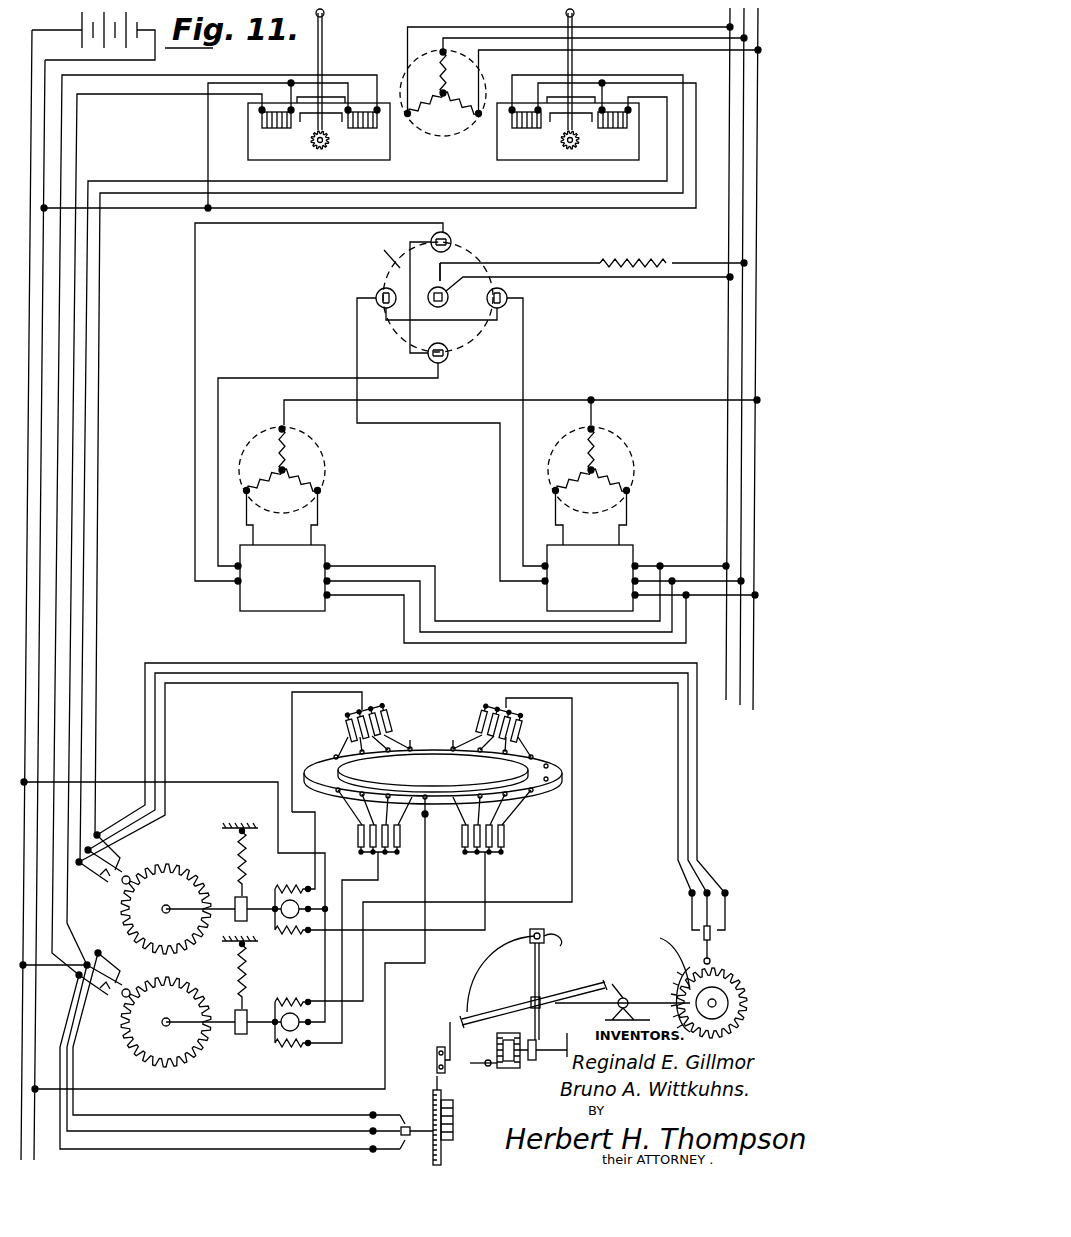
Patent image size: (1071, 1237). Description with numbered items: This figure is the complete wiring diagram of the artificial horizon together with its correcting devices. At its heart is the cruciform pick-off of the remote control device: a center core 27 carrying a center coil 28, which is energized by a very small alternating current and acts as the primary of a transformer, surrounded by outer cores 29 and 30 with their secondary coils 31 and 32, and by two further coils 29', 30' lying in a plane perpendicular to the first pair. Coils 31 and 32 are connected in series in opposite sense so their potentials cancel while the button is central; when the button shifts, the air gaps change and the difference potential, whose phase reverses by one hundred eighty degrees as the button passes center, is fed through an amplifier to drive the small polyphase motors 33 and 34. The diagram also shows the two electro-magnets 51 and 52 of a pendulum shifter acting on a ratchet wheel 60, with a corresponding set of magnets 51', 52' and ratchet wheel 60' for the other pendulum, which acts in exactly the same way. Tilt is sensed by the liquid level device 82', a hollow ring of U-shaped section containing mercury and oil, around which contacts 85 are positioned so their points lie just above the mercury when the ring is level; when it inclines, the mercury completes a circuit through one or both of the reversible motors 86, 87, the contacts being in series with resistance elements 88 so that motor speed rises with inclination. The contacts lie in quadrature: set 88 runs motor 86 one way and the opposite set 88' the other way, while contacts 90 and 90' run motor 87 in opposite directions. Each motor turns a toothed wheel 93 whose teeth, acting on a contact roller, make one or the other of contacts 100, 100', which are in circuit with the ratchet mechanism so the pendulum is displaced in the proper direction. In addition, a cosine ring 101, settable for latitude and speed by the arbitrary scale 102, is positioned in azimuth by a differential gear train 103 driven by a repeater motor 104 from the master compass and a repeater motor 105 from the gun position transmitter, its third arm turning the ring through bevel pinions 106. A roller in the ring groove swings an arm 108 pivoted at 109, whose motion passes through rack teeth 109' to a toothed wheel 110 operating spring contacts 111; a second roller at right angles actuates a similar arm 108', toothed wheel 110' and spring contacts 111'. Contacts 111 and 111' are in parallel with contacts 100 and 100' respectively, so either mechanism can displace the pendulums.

The center core 27 is at (425, 272).
The center coil 28 is at (453, 302).
The outer core 29 is at (384, 253).
The coil 29' is at (463, 232).
The outer core 30 is at (523, 294).
The coil 30' is at (457, 364).
The coil 31 is at (376, 292).
The coil 32 is at (470, 324).
The A. C. motor 33 is at (322, 447).
The polyphase motor 34 is at (631, 447).
The electro-magnet 51 is at (272, 135).
The solenoid coil 51' is at (522, 135).
The electro-magnet 52 is at (363, 135).
The solenoid coil 52' is at (615, 135).
The ratchet wheel 60 is at (321, 102).
The lever 60' is at (575, 102).
The liquid level device 82' is at (468, 775).
The contacts 85 is at (452, 747).
The reversible motor 86 is at (238, 878).
The reversible motor 87 is at (238, 991).
The resistance elements 88 is at (379, 729).
The set of contacts 88' is at (500, 823).
The set of contacts 90 is at (504, 730).
The contacts 90' is at (366, 822).
The toothed wheel 93 is at (166, 965).
The contact 100 is at (104, 877).
The contact 100' is at (104, 995).
The cosine ring 101 is at (464, 1021).
The arbitrary scale 102 is at (482, 957).
The differential gear train 103 is at (507, 1068).
The repeater motor 104 is at (536, 1058).
The repeater motor 105 is at (480, 1068).
The bevel pinions 106 is at (541, 1005).
The arm 108 is at (667, 999).
The arm 108' is at (422, 1047).
The pivot 109 is at (622, 989).
The rack teeth 109' is at (659, 953).
The toothed wheel 110 is at (733, 1003).
The toothed wheel 110' is at (464, 1128).
The spring contacts 111 is at (738, 945).
The spring contacts 111' is at (402, 1146).